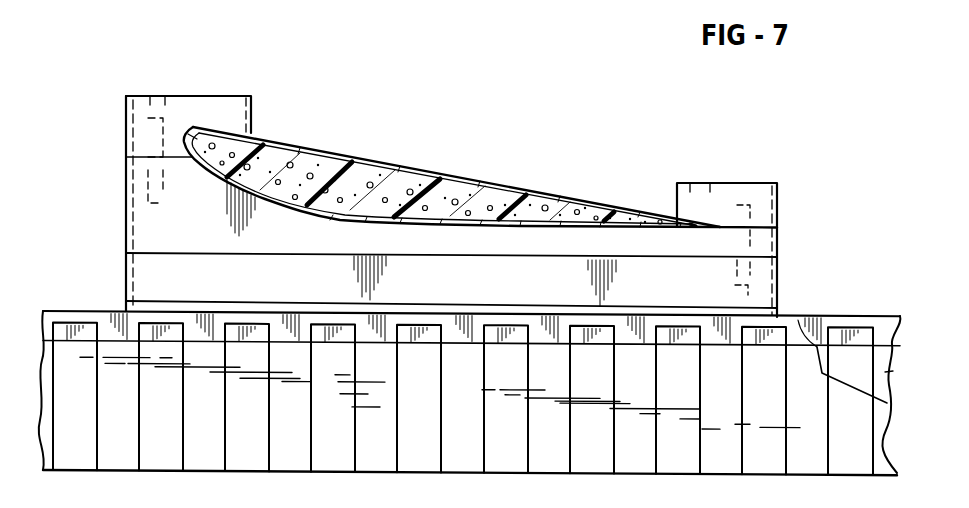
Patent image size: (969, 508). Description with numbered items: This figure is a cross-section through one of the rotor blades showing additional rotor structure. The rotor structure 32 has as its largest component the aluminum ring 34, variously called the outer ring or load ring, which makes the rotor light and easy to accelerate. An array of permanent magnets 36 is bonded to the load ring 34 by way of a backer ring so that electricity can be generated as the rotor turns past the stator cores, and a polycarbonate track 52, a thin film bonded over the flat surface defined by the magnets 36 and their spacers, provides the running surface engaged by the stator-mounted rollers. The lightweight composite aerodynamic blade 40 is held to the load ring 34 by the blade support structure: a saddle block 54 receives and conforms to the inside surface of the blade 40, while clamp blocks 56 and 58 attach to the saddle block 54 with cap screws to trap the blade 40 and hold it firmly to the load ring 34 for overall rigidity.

The rotor structure 32 is at (93, 306).
The aluminum ring 34 is at (885, 372).
The permanent magnets 36 is at (863, 340).
The aerodynamic blade 40 is at (438, 167).
The polycarbonate track 52 is at (798, 363).
The saddle block 54 is at (138, 190).
The clamp block 56 is at (228, 102).
The clamp block 58 is at (708, 183).